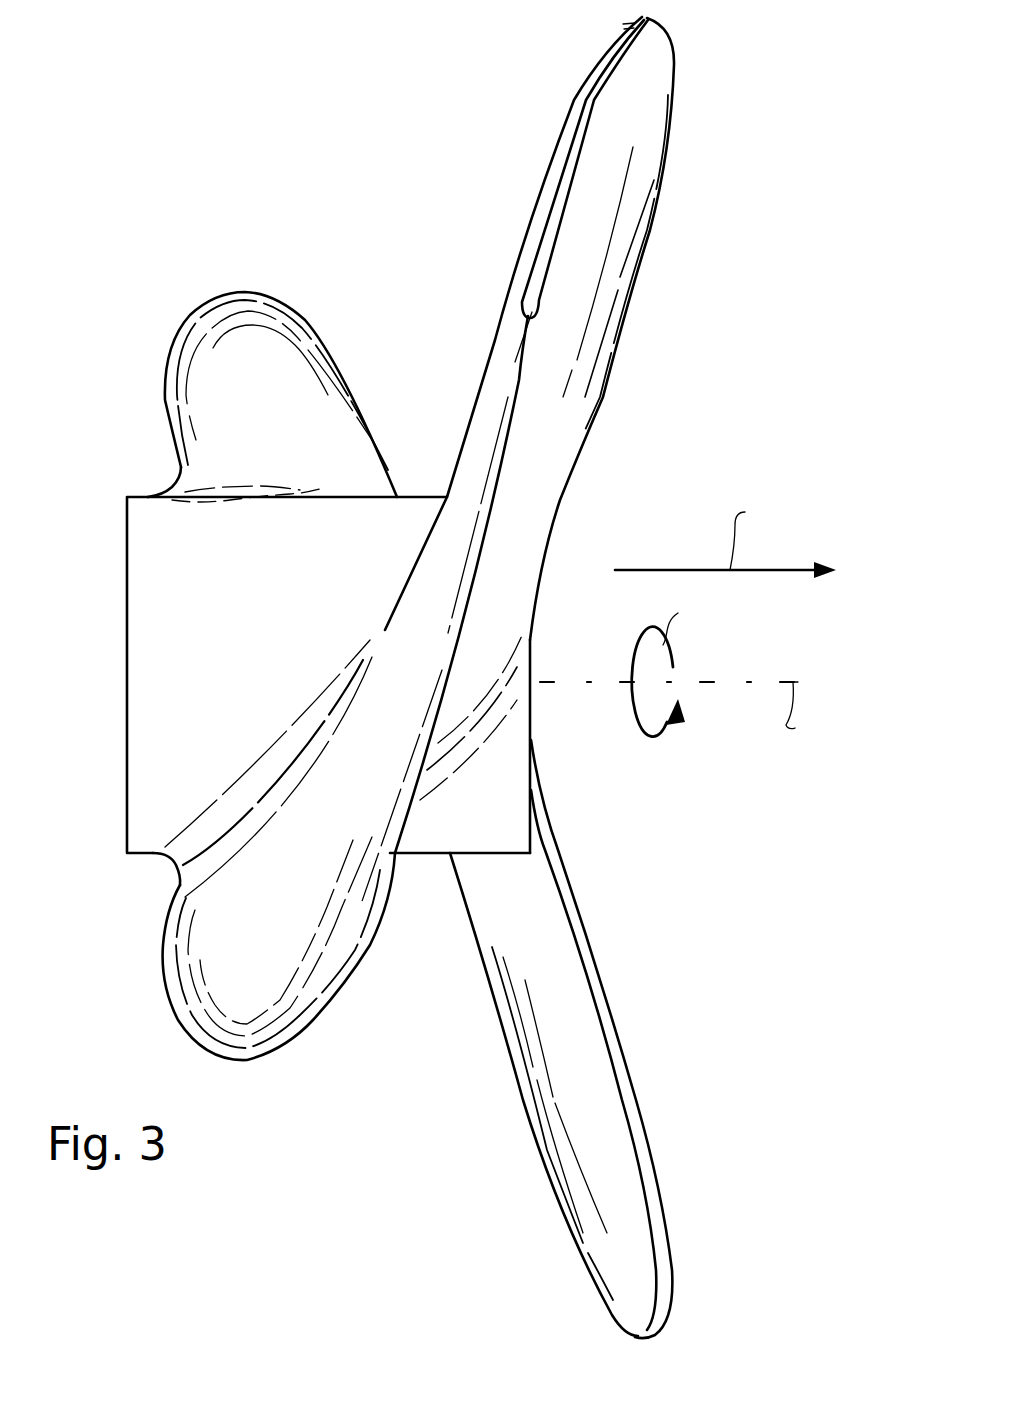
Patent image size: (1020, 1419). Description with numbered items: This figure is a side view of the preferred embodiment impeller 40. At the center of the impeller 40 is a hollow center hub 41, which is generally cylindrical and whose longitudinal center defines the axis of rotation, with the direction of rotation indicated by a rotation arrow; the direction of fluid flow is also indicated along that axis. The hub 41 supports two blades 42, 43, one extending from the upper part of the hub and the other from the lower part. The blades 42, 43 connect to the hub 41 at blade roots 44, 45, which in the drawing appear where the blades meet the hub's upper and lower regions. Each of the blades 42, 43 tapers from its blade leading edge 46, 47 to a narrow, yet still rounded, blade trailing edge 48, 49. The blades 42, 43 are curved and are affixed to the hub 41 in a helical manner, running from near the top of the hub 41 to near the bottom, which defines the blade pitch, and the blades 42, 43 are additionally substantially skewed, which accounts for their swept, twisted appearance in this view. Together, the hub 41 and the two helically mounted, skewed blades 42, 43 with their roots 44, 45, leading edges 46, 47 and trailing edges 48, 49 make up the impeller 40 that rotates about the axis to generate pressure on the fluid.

The impeller 40 is at (128, 112).
The hollow center hub 41 is at (127, 683).
The blade 42 is at (675, 42).
The blade 43 is at (670, 1193).
The blade root 44 is at (178, 888).
The blade root 45 is at (148, 495).
The blade leading edge 46 is at (162, 965).
The blade leading edge 47 is at (165, 372).
The blade trailing edge 48 is at (560, 510).
The blade trailing edge 49 is at (563, 881).